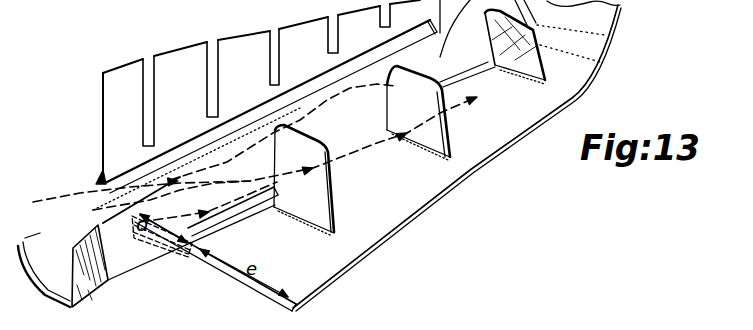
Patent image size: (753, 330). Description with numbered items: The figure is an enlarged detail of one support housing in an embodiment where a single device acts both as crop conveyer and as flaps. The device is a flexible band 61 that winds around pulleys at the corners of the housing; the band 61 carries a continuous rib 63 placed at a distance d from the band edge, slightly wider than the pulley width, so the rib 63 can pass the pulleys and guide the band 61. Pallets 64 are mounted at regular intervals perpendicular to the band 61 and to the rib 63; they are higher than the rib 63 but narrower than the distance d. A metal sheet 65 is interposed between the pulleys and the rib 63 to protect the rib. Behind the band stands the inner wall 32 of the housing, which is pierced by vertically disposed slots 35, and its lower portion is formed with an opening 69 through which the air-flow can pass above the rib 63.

The inner wall 32 is at (120, 69).
The vertically disposed slots 35 is at (147, 80).
The opening 69 is at (140, 173).
The metal sheet 65 is at (122, 268).
The flexible band 61 is at (222, 266).
The continuous rib 63 is at (237, 213).
The pallets 64 is at (450, 150).